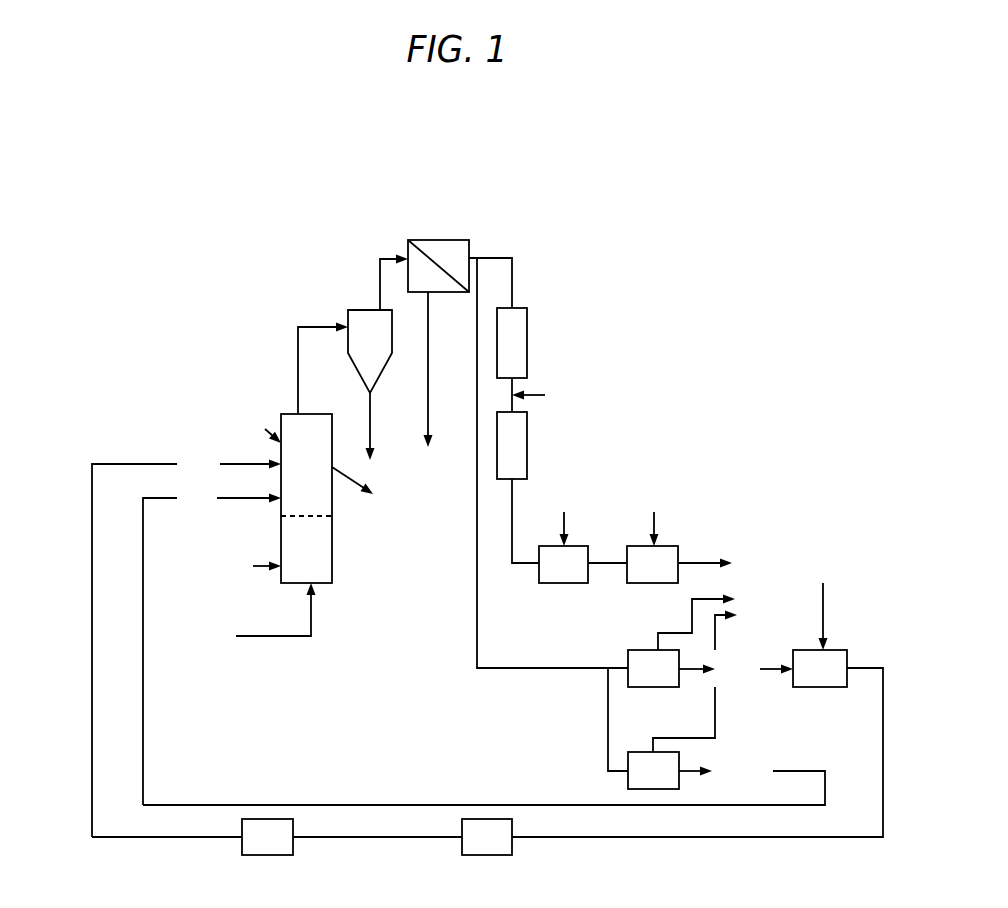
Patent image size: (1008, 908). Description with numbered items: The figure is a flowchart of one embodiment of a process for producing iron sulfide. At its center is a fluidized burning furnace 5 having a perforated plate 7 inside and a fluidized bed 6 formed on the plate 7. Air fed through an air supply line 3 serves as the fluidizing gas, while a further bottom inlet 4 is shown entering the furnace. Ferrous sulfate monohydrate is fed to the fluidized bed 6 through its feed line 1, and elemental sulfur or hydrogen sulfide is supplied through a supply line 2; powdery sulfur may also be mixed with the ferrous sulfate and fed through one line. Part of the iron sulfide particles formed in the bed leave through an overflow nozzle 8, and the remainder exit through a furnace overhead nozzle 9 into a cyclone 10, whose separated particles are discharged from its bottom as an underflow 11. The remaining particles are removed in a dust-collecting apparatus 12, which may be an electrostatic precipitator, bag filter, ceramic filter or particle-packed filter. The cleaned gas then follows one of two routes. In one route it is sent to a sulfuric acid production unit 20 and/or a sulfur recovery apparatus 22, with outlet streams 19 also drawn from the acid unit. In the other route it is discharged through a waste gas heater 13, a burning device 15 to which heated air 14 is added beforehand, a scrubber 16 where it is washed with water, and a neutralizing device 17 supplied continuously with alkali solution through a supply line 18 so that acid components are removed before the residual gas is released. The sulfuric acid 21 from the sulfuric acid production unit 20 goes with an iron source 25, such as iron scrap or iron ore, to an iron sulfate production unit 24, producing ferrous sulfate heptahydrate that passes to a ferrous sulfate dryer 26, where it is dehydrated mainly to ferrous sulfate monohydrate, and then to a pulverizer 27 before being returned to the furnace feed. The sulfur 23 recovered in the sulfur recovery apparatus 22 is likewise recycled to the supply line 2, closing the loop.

The feed line for ferrous sulfate monohydrate 1 is at (186, 644).
The supply line for sulfur or hydrogen sulfide 2 is at (212, 645).
The air supply line 3 is at (258, 566).
The bottom feed stream (gas) 4 is at (265, 616).
The fluidized burning furnace 5 is at (265, 428).
The fluidized bed 6 is at (306, 498).
The perforated plate 7 is at (319, 515).
The overflow nozzle 8 is at (363, 491).
The furnace overhead nozzle 9 is at (323, 369).
The cyclone 10 is at (370, 351).
The underflow 11 is at (382, 426).
The dust-collecting apparatus 12 is at (504, 454).
The waste gas heater 13 is at (512, 360).
The heated air 14 is at (542, 395).
The burning device 15 is at (518, 487).
The scrubber 16 is at (583, 535).
The neutralizing device 17 is at (679, 564).
The supply line for alkali solution 18 is at (654, 516).
The outlet streams 19 is at (710, 618).
The sulfuric acid production unit 20 is at (671, 668).
The sulfuric acid 21 is at (760, 669).
The sulfur recovery apparatus 22 is at (661, 728).
The sulfur 23 is at (484, 782).
The iron sulfate production unit 24 is at (697, 743).
The iron source 25 is at (823, 602).
The ferrous sulfate dryer 26 is at (402, 837).
The pulverizer 27 is at (192, 837).